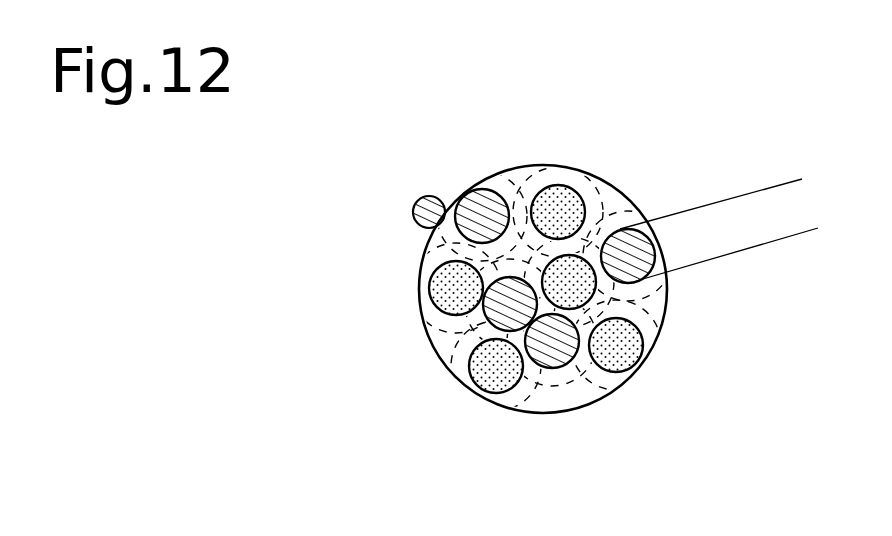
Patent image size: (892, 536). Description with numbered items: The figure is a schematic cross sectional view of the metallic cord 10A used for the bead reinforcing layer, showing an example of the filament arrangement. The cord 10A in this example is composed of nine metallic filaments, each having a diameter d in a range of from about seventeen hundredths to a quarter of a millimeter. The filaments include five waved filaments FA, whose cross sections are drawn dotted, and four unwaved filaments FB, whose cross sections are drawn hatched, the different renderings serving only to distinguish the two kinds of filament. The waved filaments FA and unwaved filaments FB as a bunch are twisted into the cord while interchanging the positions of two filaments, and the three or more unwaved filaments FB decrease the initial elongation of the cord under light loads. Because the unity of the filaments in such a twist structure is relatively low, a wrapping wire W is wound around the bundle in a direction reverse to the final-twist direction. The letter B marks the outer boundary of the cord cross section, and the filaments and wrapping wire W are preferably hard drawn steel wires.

The metallic cord 10A is at (390, 320).
The sheath / binder B is at (419, 277).
The wrapping wire W is at (414, 206).
The unwaved filament FB is at (476, 212).
The waved filament FA is at (553, 198).
The filament diameter d is at (800, 181).